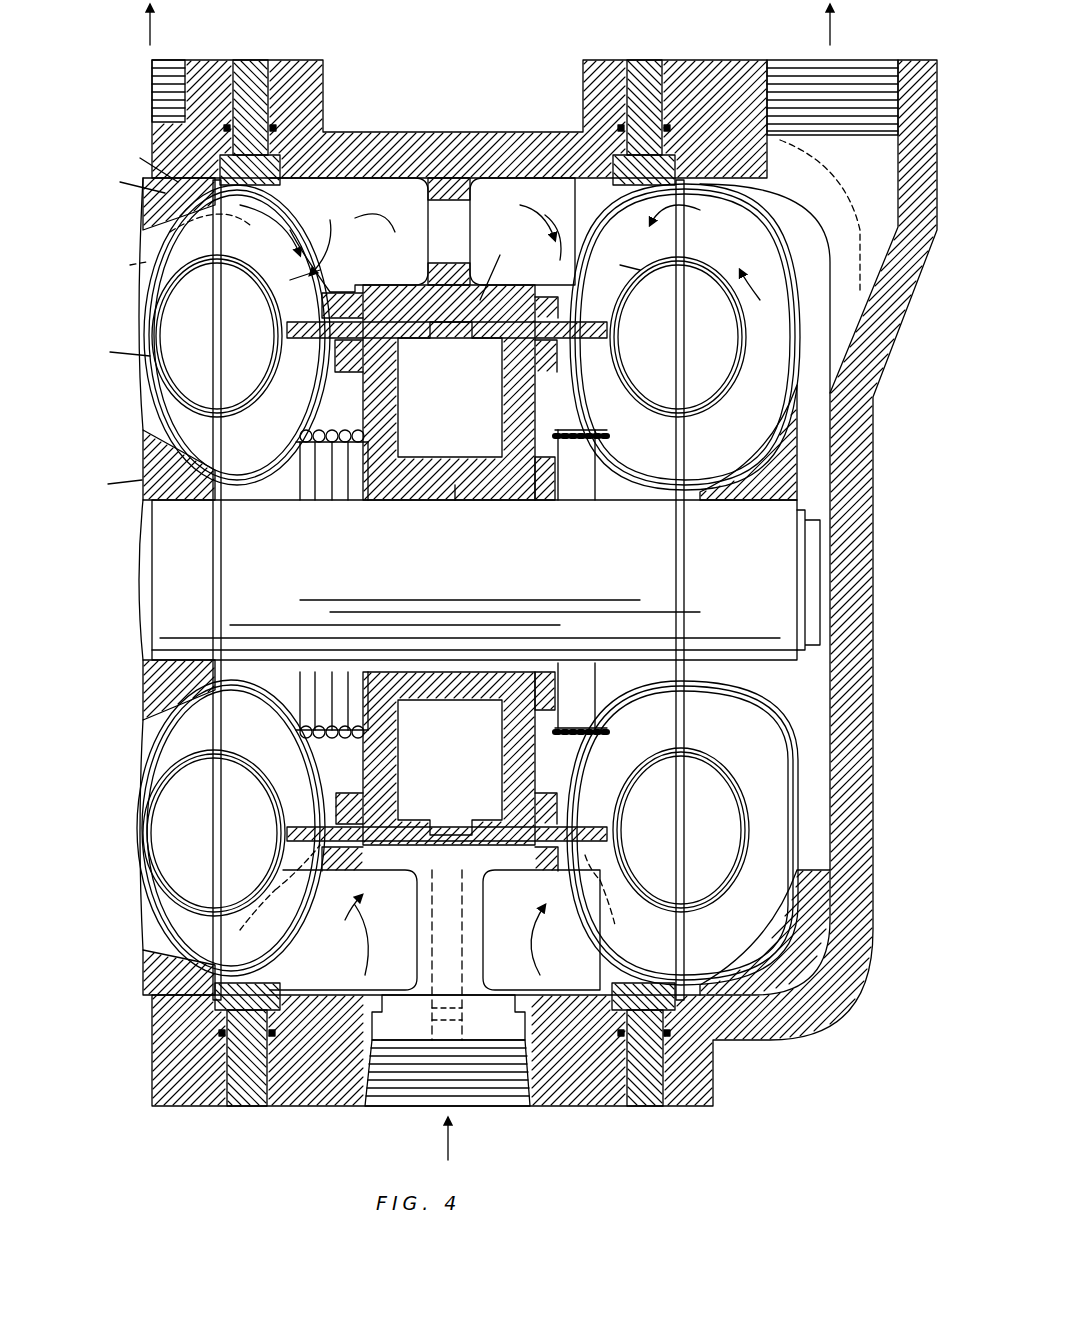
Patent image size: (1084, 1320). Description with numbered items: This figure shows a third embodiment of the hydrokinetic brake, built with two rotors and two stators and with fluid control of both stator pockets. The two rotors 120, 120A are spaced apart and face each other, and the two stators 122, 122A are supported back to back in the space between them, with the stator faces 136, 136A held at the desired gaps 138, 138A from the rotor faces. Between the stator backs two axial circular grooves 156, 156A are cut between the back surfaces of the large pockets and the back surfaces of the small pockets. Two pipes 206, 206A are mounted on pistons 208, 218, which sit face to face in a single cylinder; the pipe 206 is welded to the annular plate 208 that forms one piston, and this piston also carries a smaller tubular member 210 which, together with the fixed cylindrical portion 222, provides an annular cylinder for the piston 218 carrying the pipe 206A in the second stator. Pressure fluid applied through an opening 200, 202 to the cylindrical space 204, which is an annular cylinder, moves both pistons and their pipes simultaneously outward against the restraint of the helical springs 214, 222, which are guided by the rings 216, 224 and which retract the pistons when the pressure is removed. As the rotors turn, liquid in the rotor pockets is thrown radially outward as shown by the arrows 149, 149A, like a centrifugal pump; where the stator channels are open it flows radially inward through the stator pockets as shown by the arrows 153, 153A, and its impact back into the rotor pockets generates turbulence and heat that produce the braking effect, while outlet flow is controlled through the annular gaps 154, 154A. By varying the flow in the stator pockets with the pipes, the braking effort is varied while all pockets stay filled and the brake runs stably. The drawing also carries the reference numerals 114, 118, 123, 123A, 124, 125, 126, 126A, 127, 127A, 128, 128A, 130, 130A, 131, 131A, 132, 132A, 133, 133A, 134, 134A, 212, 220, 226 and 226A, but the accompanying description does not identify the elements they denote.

The housing 114 is at (873, 398).
The shaft 118 is at (370, 582).
The rotor 120 is at (107, 481).
The rotor 120A is at (800, 472).
The stator 122 is at (295, 212).
The stator 122A is at (600, 205).
The bolt 123 is at (265, 57).
The bolt 123A is at (640, 57).
The bolt 124 is at (510, 1098).
The inlet flow 125 is at (452, 1140).
The threaded port 126 is at (180, 57).
The threaded port 126A is at (880, 62).
The outlet flow 127 is at (145, 38).
The outlet flow 127A is at (838, 18).
The passage 128 is at (272, 897).
The passage 128A is at (627, 900).
The outer shell 130 is at (142, 240).
The outer shell 130A is at (762, 228).
The shell wall 131 is at (122, 179).
The shell wall 131A is at (742, 202).
The inner torus 132 is at (180, 305).
The inner torus 132A is at (705, 275).
The torus wall 133 is at (112, 349).
The torus wall 133A is at (735, 415).
The lower outer shell 134 is at (208, 722).
The lower outer shell 134A is at (688, 742).
The stator face 136 is at (222, 742).
The stator face 136A is at (670, 720).
The gap 138 is at (222, 812).
The gap 138A is at (680, 805).
The arrow 149 is at (169, 244).
The arrow 149A is at (860, 238).
The arrow 153 is at (261, 230).
The arrow 153A is at (699, 225).
The annular gap 154 is at (136, 161).
The annular gap 154A is at (750, 176).
The axial circular groove 156 is at (325, 272).
The axial circular groove 156A is at (684, 262).
The opening 200 is at (440, 1040).
The opening 202 is at (435, 928).
The cylindrical space 204 is at (465, 398).
The pipe 206 is at (428, 581).
The pipe 206A is at (593, 592).
The annular plate 208 is at (425, 722).
The tubular member 210 is at (455, 500).
The spring seat 212 is at (345, 705).
The helical spring 214 is at (333, 492).
The ring 216 is at (302, 490).
The piston 218 is at (503, 350).
The recess 220 is at (470, 440).
The helical spring 222 is at (498, 297).
The ring 224 is at (590, 492).
The chamber 226 is at (349, 584).
The chamber 226A is at (535, 584).